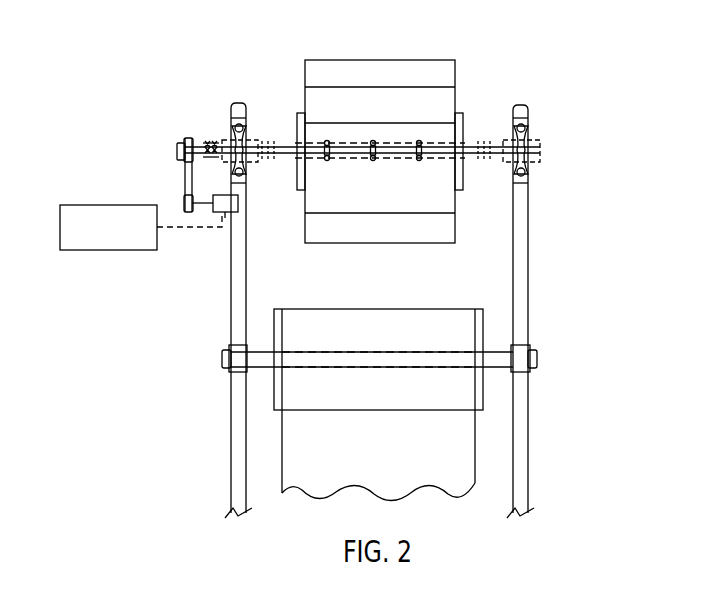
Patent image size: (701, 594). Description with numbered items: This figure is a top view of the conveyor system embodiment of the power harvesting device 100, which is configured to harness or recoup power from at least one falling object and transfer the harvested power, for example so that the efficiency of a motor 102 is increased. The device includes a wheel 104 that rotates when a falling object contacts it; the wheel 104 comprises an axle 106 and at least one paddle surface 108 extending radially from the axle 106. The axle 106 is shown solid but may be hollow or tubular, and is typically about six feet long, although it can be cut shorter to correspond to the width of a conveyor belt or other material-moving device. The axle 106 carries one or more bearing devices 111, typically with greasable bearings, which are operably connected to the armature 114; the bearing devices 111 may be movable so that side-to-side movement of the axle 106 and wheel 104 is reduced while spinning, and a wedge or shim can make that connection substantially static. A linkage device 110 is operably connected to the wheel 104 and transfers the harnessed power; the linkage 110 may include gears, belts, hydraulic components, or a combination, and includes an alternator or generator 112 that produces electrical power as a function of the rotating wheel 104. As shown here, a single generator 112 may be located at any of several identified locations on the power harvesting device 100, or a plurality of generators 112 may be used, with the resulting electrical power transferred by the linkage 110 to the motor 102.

The power harvesting device 100 is at (155, 265).
The motor 102 is at (80, 205).
The wheel 104 is at (442, 122).
The axle 106 is at (478, 145).
The paddle surface 108 is at (355, 60).
The linkage device 110 is at (188, 175).
The bearing device 111 is at (229, 133).
The generator 112 is at (252, 135).
The armature 114 is at (231, 258).